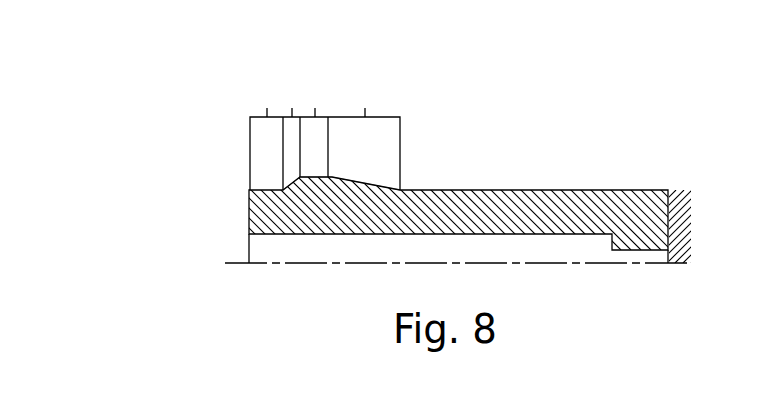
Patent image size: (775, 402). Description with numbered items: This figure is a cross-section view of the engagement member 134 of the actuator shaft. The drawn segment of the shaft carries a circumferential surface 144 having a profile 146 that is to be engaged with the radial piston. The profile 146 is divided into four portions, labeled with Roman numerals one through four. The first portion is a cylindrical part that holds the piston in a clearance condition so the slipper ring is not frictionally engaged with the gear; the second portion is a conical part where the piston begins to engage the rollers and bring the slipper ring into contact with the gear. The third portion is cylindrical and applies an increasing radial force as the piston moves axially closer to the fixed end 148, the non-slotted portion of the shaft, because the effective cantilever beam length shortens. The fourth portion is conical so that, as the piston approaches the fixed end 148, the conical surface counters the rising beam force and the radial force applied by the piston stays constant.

The engagement member 134 is at (527, 192).
The circumferential surface 144 is at (365, 180).
The profile 146 is at (210, 108).
The fixed end 148 is at (675, 223).